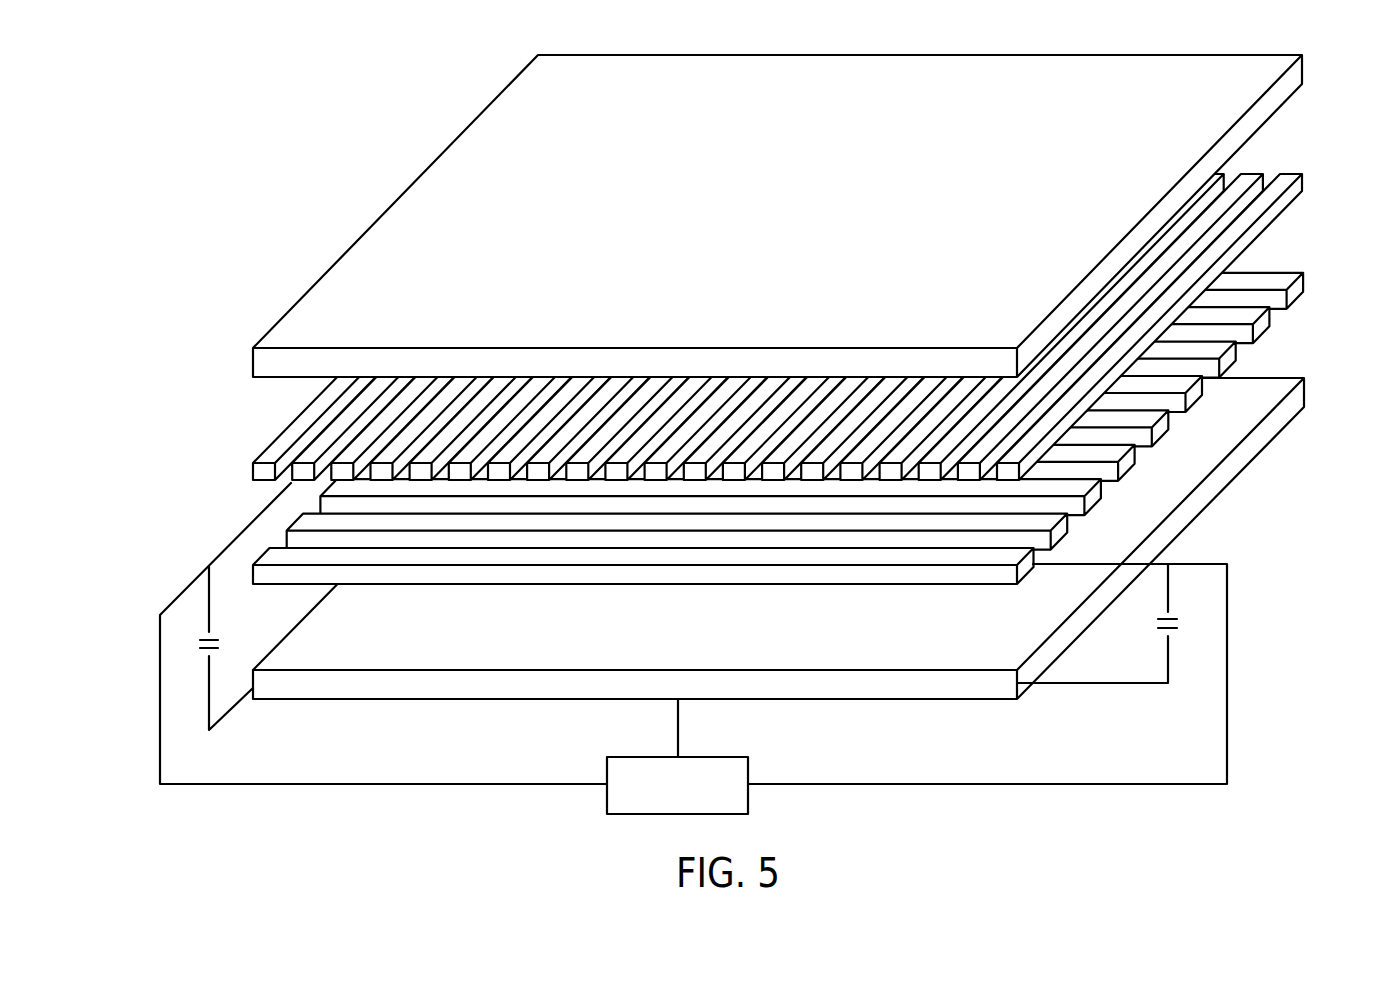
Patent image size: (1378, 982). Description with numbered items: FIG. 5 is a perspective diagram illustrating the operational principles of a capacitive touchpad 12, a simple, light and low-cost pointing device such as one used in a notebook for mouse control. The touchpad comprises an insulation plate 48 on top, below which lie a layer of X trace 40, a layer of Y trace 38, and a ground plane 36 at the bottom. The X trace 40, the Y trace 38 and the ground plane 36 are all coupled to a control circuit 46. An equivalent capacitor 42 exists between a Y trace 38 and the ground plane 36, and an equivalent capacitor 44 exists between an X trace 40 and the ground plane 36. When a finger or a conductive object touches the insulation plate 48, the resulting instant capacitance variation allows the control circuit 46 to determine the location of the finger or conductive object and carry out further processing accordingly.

The sensor assembly 12 is at (778, 377).
The ground plane 36 is at (1255, 392).
The layer of Y trace 38 is at (1255, 283).
The layer of X trace 40 is at (1283, 166).
The equivalent capacitor 42 is at (1188, 622).
The equivalent capacitor 44 is at (190, 647).
The control circuit 46 is at (712, 757).
The insulation plate 48 is at (316, 304).